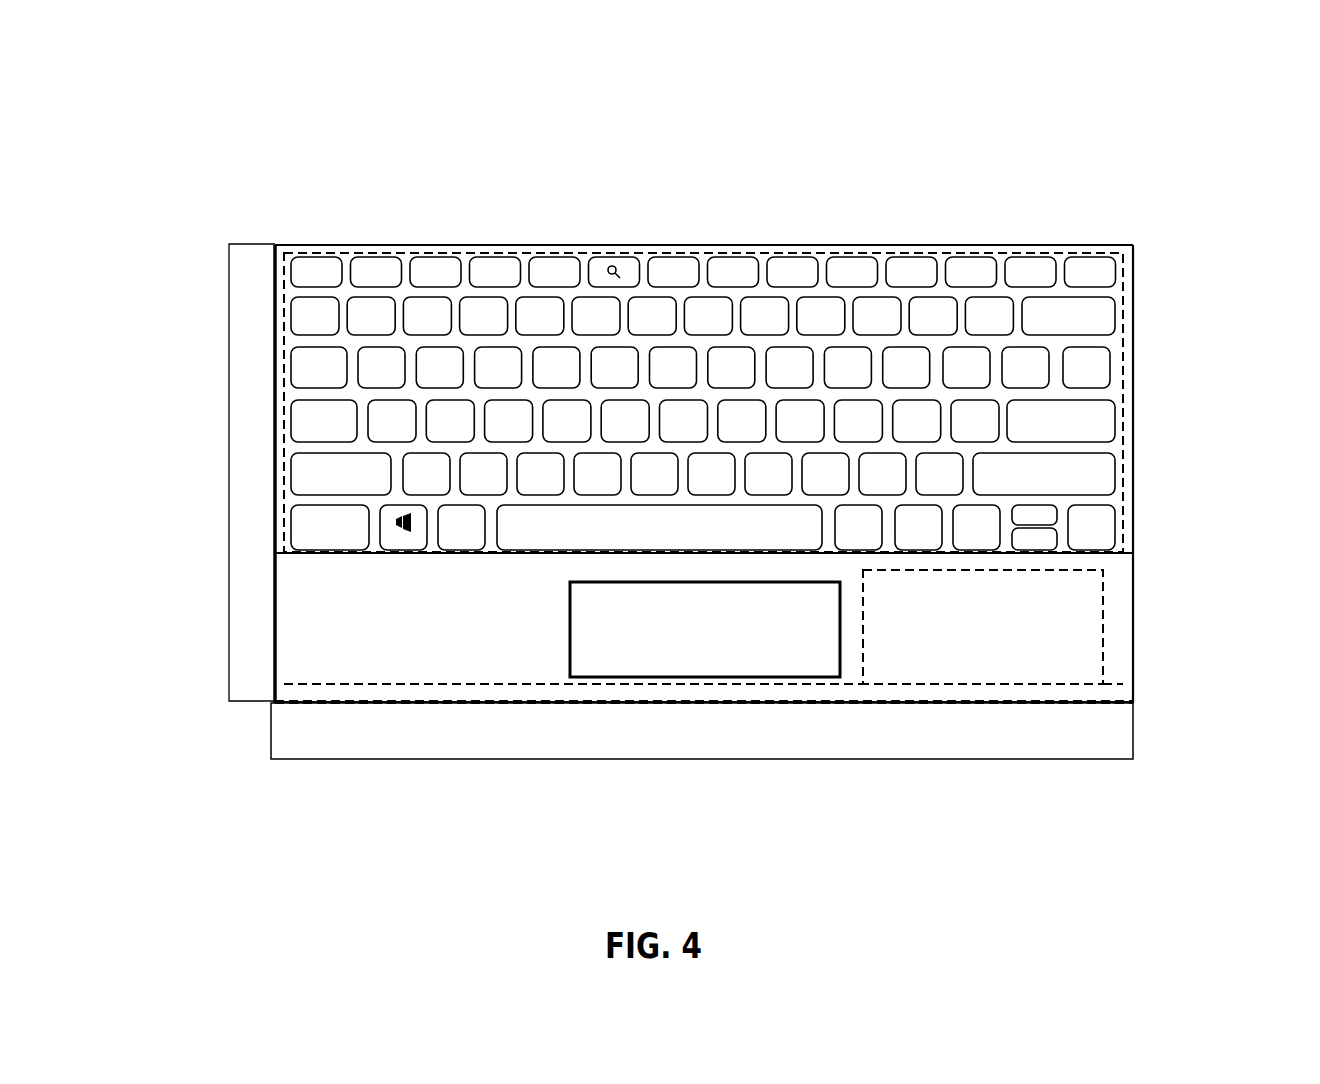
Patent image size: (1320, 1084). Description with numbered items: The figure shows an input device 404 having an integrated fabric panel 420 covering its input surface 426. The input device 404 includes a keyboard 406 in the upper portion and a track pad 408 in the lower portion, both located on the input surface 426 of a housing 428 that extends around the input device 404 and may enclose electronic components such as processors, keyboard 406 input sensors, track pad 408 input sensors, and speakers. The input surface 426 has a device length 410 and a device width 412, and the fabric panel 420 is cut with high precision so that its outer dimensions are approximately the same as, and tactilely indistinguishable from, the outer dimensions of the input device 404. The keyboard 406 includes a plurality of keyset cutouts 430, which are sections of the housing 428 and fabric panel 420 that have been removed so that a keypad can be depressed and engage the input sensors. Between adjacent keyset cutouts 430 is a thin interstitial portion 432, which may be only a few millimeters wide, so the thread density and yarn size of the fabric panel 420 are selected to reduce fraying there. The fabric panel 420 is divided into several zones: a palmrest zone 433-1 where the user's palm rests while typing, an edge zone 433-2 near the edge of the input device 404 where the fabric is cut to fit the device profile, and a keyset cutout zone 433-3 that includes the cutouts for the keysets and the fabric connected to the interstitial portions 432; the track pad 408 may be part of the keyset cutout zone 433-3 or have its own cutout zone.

The input device 404 is at (1127, 123).
The keyboard 406 is at (762, 250).
The track pad 408 is at (820, 653).
The device length 410 is at (710, 762).
The device width 412 is at (228, 458).
The fabric panel 420 is at (1122, 598).
The input surface 426 is at (1125, 572).
The housing 428 is at (1132, 420).
The keyset cutouts 430 is at (610, 280).
The interstitial portion 432 is at (478, 293).
The palmrest zone 433-1 is at (1103, 627).
The edge zone 433-2 is at (1113, 683).
The keyset cutout zone 433-3 is at (1125, 260).